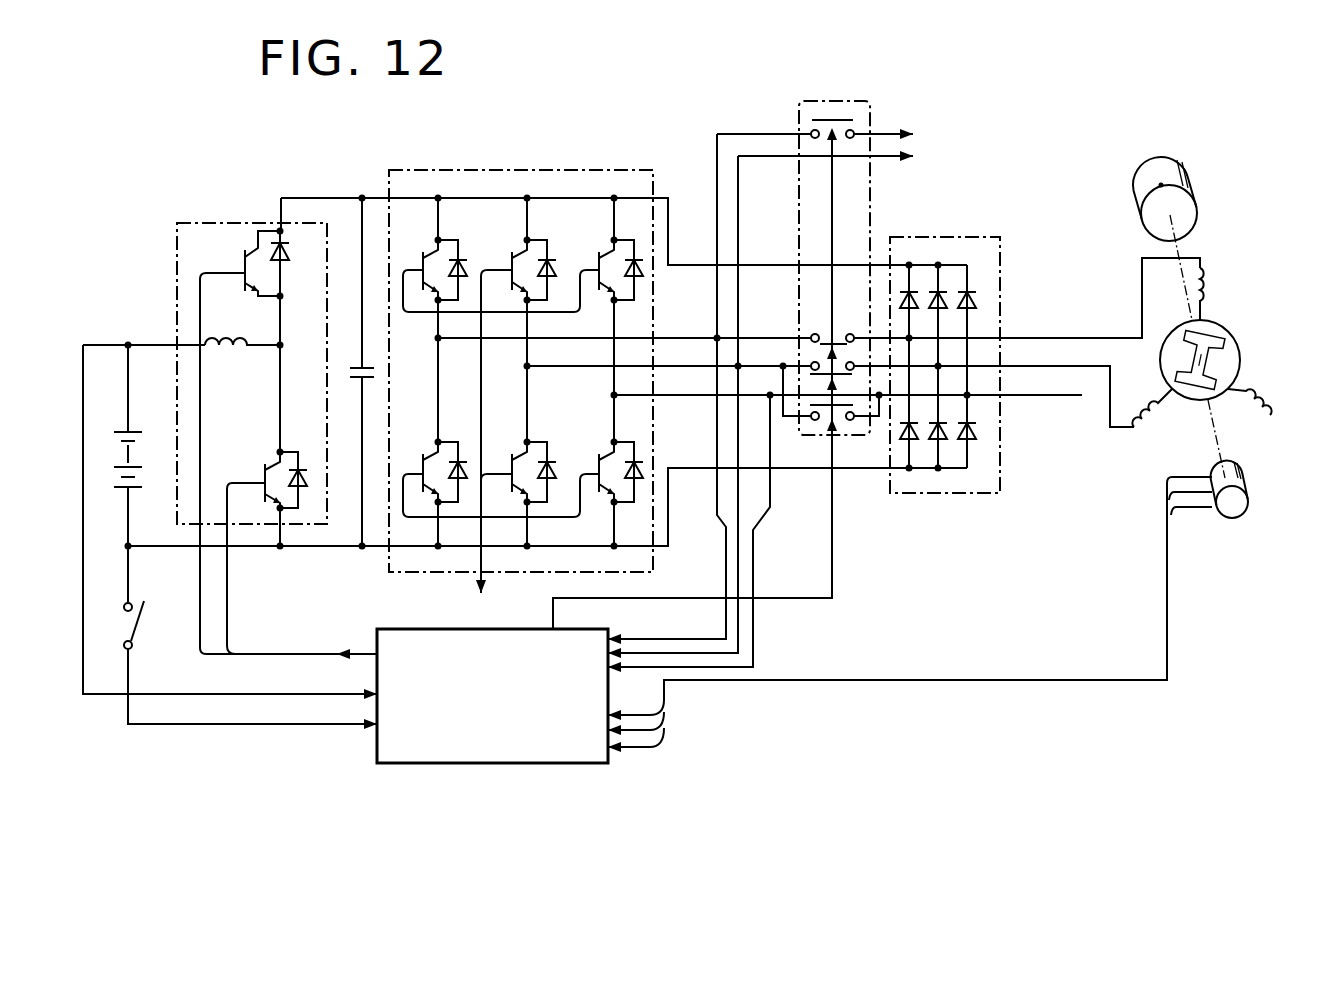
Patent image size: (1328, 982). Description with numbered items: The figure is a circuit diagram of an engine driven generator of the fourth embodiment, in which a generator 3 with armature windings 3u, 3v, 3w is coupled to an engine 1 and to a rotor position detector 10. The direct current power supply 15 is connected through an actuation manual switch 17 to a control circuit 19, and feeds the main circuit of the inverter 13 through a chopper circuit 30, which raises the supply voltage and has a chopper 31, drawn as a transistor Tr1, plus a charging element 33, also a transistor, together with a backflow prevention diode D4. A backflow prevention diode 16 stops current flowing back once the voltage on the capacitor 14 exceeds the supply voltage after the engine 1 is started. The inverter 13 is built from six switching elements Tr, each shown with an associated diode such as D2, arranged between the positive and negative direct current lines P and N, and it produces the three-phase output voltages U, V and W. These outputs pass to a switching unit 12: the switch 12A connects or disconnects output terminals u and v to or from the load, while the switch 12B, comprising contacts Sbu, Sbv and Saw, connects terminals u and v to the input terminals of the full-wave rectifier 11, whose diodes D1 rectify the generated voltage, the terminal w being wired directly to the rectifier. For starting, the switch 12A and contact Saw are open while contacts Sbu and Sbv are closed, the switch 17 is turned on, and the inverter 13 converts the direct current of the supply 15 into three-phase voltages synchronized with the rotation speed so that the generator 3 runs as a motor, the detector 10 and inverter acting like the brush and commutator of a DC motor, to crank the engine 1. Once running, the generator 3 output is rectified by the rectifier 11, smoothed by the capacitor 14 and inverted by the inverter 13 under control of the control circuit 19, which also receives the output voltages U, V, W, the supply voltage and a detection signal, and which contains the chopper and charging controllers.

The engine 1 is at (1190, 181).
The generator 3 is at (1203, 347).
The armature winding 3u is at (1219, 294).
The armature winding 3v is at (1147, 403).
The armature winding 3w is at (1256, 400).
The rotor position detector 10 is at (1246, 480).
The full-wave rectifier 11 is at (961, 337).
The switching unit 12 is at (733, 334).
The switch 12A is at (840, 118).
The switch 12B is at (852, 385).
The inverter 13 is at (521, 349).
The capacitor 14 is at (352, 368).
The direct current power supply 15 is at (113, 477).
The backflow prevention diode 16 is at (291, 256).
The actuation manual switch 17 is at (137, 627).
The control circuit 19 is at (377, 740).
The chopper circuit 30 is at (277, 416).
The chopper 31 is at (266, 460).
The element for charging the battery 33 is at (247, 268).
The rectifier diode D1 is at (976, 300).
The flywheel diode D2 is at (551, 273).
The backflow prevention diode D4 is at (308, 478).
The switching element Tr is at (423, 263).
The transistor Tr1 is at (265, 497).
The positive DC bus P is at (398, 197).
The speed of rotation N is at (402, 548).
The output voltage U is at (624, 327).
The output voltage V is at (669, 357).
The output voltage W is at (848, 387).
The contact Sbu is at (819, 348).
The contact Sbv is at (820, 377).
The contact Saw is at (830, 412).